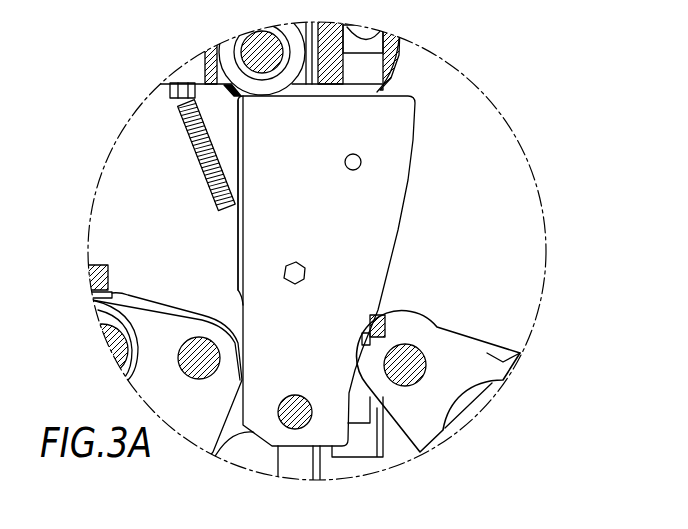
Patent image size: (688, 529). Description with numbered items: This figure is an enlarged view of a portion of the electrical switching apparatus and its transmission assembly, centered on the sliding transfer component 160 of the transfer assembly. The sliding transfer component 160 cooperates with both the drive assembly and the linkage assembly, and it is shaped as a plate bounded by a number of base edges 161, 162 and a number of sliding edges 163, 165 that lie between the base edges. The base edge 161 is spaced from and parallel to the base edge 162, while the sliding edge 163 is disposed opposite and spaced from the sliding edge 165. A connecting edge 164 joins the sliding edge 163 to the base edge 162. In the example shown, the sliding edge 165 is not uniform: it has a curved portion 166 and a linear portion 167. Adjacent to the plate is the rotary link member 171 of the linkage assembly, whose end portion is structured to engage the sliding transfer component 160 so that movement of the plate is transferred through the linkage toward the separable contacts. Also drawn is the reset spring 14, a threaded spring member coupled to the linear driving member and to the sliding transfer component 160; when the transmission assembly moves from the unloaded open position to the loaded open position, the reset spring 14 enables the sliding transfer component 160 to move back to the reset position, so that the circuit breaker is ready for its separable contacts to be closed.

The reset spring 14 is at (204, 156).
The sliding transfer component 160 is at (231, 88).
The base edge 161 is at (398, 56).
The base edge 162 is at (337, 472).
The sliding edge 163 is at (241, 135).
The connecting edge 164 is at (218, 455).
The sliding edge 165 is at (362, 250).
The curved portion 166 is at (376, 312).
The linear portion 167 is at (411, 160).
The rotary link member 171 is at (428, 318).